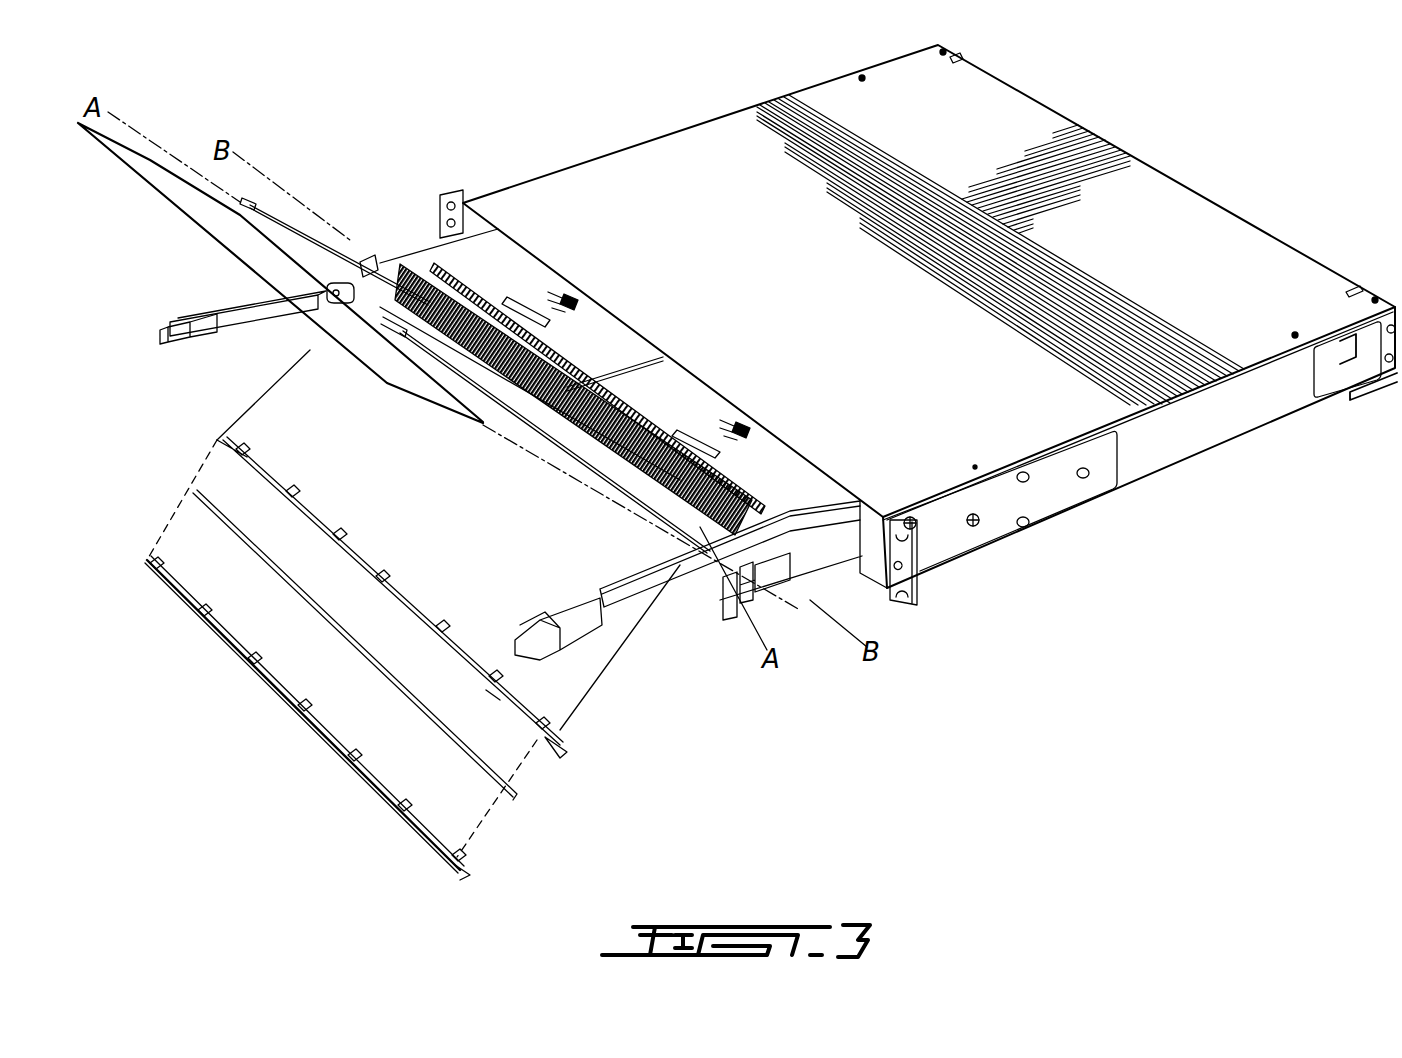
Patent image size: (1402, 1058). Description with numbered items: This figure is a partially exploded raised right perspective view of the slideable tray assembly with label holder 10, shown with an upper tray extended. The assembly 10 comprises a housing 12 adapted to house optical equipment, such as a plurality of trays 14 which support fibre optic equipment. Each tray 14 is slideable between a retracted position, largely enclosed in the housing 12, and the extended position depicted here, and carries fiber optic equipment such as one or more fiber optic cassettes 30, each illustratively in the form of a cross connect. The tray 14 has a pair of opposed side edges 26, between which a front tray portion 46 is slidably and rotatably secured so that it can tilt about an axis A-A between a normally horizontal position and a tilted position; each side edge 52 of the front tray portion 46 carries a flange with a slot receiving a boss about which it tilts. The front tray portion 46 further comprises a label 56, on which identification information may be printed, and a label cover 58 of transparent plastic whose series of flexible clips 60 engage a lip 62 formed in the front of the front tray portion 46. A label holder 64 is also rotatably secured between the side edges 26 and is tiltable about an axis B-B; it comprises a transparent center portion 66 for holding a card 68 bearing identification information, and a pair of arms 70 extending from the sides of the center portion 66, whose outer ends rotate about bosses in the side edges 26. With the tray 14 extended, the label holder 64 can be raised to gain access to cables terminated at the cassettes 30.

The slideable tray assembly with label holder 10 is at (1240, 168).
The housing 12 is at (1030, 345).
The tray 14 is at (257, 477).
The opposed side edges 26 is at (397, 253).
The fiber optic cassette 30 is at (652, 378).
The front tray portion 46 is at (290, 420).
The side edge 52 is at (280, 380).
The label 56 is at (283, 588).
The label cover 58 is at (297, 712).
The flexible clips 60 is at (233, 652).
The lip 62 is at (493, 697).
The label holder 64 is at (247, 203).
The transparent center portion 66 is at (445, 342).
The card 68 is at (163, 193).
The arms 70 is at (373, 267).